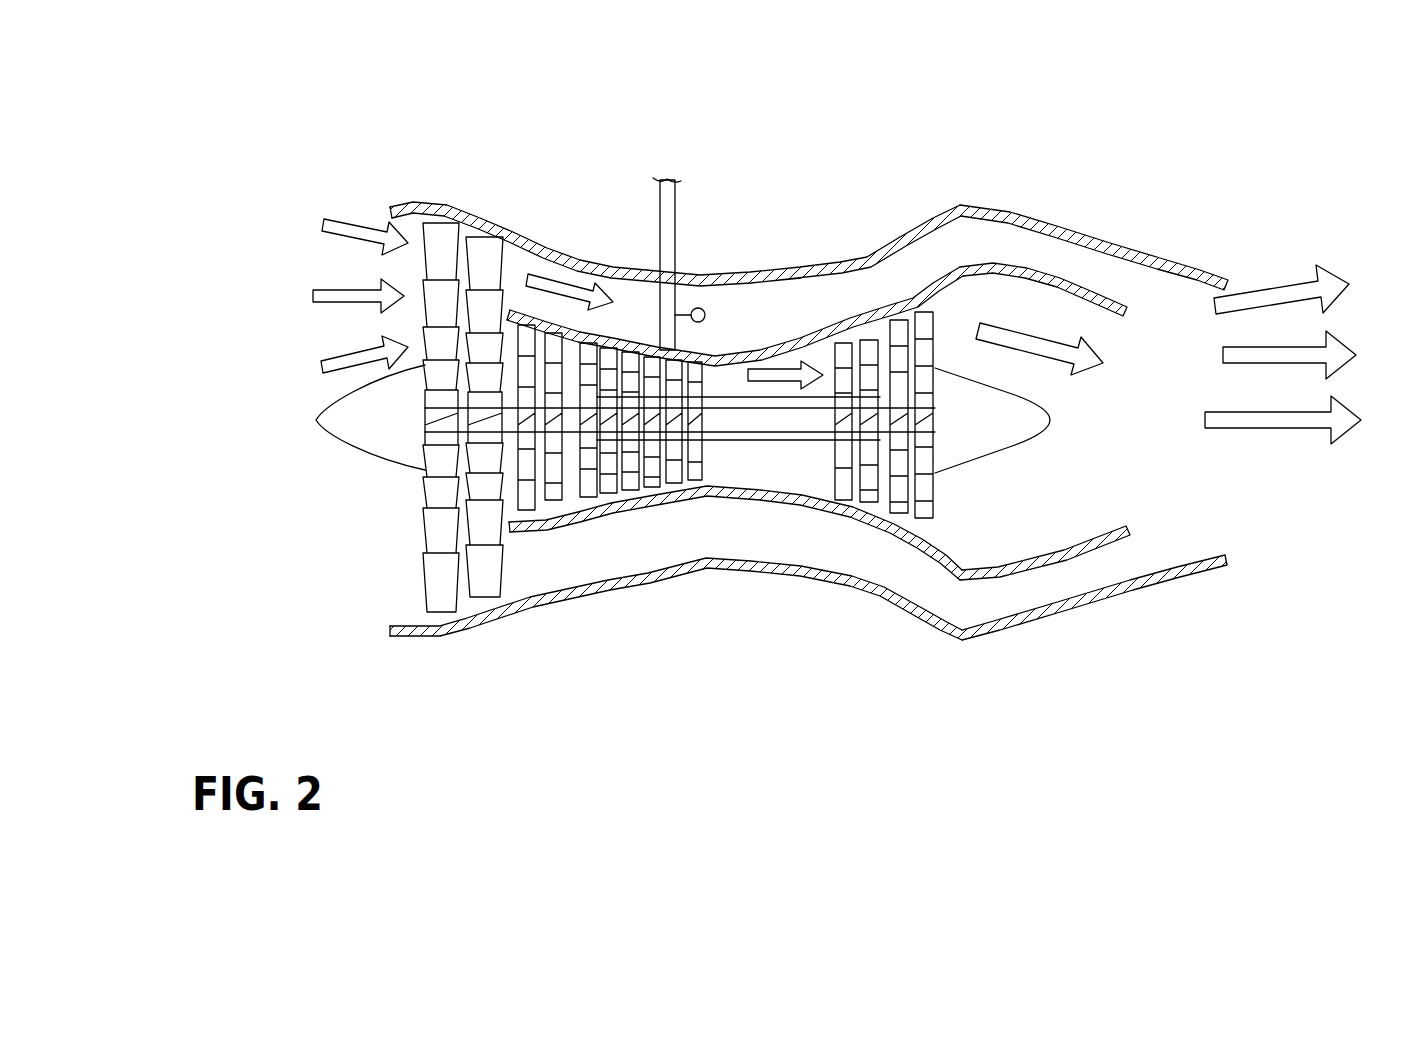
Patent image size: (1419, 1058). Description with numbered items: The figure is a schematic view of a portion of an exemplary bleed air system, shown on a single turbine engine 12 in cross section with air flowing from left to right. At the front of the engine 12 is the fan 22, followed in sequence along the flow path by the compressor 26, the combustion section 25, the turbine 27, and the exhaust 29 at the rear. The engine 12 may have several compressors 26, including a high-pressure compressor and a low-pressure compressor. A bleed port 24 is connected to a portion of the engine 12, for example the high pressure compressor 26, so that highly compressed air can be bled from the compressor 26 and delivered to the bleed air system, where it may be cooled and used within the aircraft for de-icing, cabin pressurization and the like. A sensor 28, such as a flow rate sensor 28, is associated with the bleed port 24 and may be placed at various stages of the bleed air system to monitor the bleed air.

The engine 12 is at (403, 133).
The fan 22 is at (437, 583).
The bleed port 24 is at (670, 333).
The combustion section 25 is at (792, 472).
The compressor 26 is at (672, 477).
The turbine 27 is at (870, 497).
The flow rate sensor 28 is at (698, 307).
The exhaust 29 is at (1092, 470).